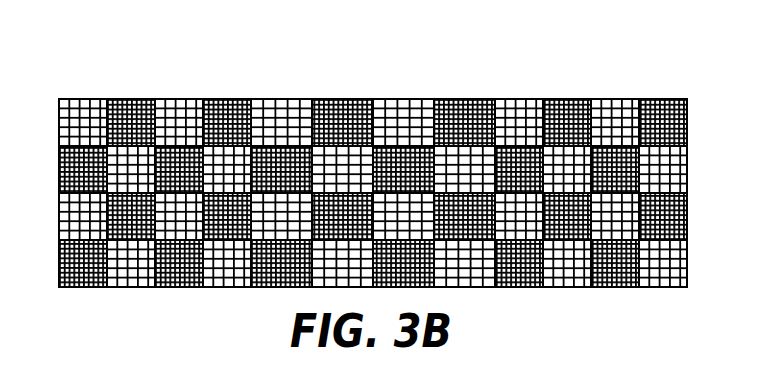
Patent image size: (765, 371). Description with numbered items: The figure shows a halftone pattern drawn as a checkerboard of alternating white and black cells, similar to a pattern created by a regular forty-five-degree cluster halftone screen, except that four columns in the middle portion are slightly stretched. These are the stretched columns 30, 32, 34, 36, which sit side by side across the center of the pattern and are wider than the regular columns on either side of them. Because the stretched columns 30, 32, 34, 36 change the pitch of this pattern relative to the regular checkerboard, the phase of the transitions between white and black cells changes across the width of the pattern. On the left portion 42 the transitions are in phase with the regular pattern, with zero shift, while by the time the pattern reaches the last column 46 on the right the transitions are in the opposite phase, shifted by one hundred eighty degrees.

The stretched column 30 is at (272, 92).
The stretched column 32 is at (343, 92).
The stretched column 34 is at (410, 91).
The stretched column 36 is at (481, 91).
The left portion 42 is at (84, 92).
The last column 46 is at (660, 91).